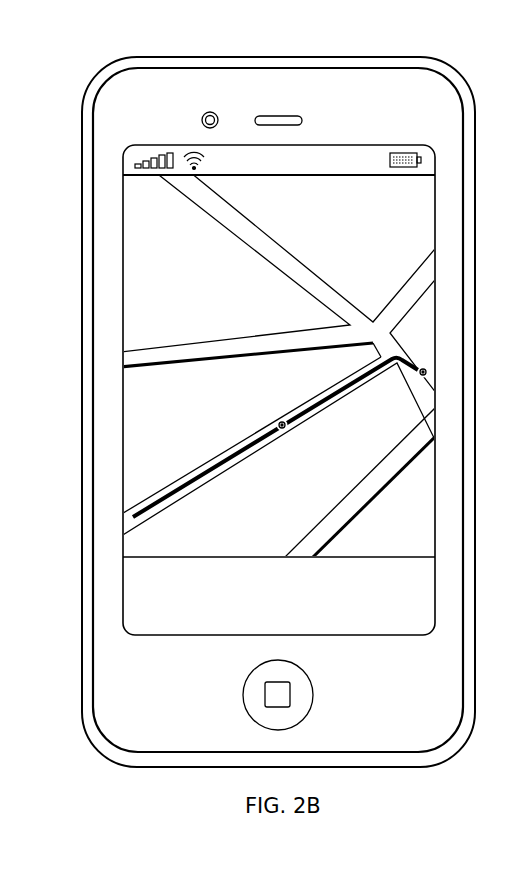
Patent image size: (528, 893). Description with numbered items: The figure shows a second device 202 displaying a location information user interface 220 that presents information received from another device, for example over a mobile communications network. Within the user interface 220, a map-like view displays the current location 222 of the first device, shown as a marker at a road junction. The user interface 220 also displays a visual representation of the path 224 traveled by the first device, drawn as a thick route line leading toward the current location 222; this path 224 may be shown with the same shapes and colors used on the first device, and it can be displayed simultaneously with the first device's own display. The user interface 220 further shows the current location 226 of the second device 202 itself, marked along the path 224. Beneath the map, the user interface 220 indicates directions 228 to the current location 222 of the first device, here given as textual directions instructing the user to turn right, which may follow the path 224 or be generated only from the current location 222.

The second device 202 is at (461, 78).
The user interface 220 is at (72, 173).
The current location 222 is at (419, 376).
The path 224 is at (322, 388).
The current location 226 is at (284, 429).
The directions 228 is at (423, 597).